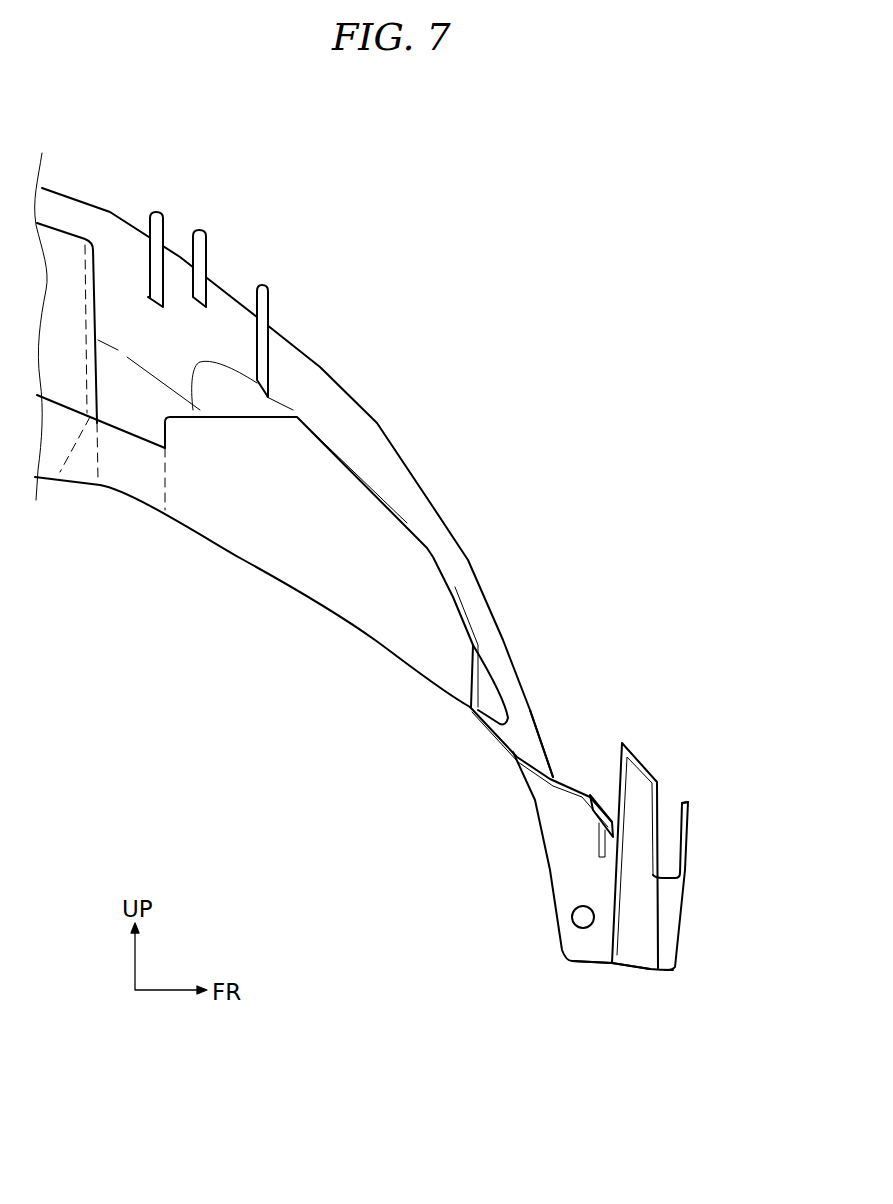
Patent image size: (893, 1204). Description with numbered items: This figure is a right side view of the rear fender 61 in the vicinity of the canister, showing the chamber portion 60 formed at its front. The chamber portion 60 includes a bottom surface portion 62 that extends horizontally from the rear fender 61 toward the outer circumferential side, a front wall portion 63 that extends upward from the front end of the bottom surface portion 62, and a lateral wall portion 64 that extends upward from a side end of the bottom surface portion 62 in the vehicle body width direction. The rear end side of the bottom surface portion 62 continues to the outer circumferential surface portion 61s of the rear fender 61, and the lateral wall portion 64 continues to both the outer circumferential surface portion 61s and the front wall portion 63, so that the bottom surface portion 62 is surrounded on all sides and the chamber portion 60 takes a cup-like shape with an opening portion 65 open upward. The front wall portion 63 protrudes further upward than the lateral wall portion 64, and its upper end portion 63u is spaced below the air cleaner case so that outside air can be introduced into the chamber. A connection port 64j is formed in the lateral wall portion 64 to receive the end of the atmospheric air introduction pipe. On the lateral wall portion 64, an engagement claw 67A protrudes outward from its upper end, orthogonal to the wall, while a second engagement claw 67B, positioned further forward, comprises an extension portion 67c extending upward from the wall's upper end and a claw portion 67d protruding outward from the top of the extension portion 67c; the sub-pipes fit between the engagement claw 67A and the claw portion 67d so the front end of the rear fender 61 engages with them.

The chamber portion 60 is at (624, 971).
The rear fender 61 is at (112, 214).
The outer circumferential surface portion 61s is at (552, 765).
The bottom surface portion 62 is at (643, 972).
The front wall portion 63 is at (715, 885).
The upper end portion 63u is at (693, 800).
The lateral wall portion 64 is at (570, 893).
The connection port 64j is at (573, 922).
The opening portion 65 is at (593, 777).
The engagement claw 67A is at (597, 817).
The engagement claw 67B is at (707, 834).
The extension portion 67c is at (645, 807).
The claw portion 67d is at (641, 765).